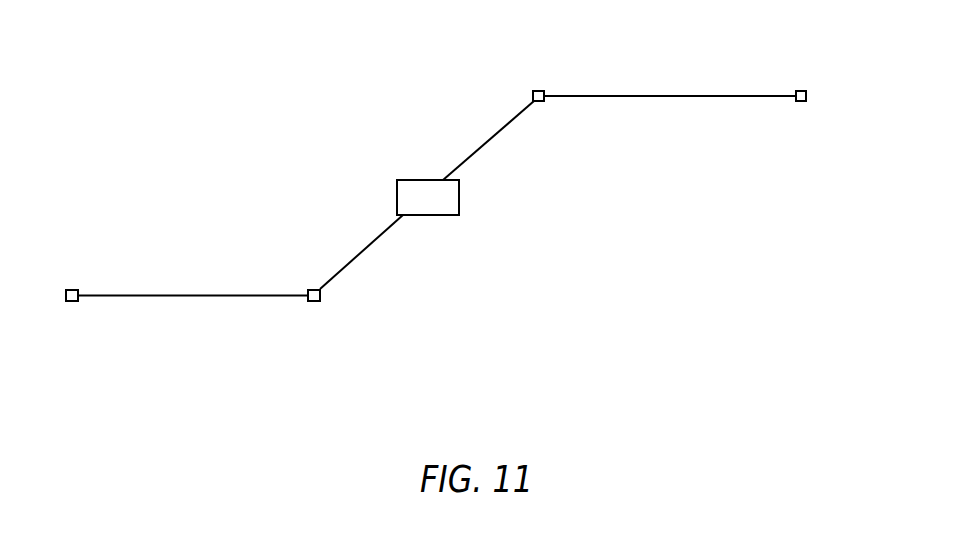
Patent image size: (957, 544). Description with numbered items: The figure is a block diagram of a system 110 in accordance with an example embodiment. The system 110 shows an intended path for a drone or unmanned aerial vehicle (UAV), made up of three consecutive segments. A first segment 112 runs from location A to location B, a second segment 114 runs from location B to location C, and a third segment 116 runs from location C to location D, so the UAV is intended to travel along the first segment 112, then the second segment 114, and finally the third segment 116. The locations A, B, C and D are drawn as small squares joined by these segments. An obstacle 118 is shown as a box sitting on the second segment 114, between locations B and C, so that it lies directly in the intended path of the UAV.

The system 110 is at (744, 356).
The first segment 112 is at (197, 296).
The second segment 114 is at (505, 123).
The third segment 116 is at (672, 96).
The obstacle 118 is at (459, 203).